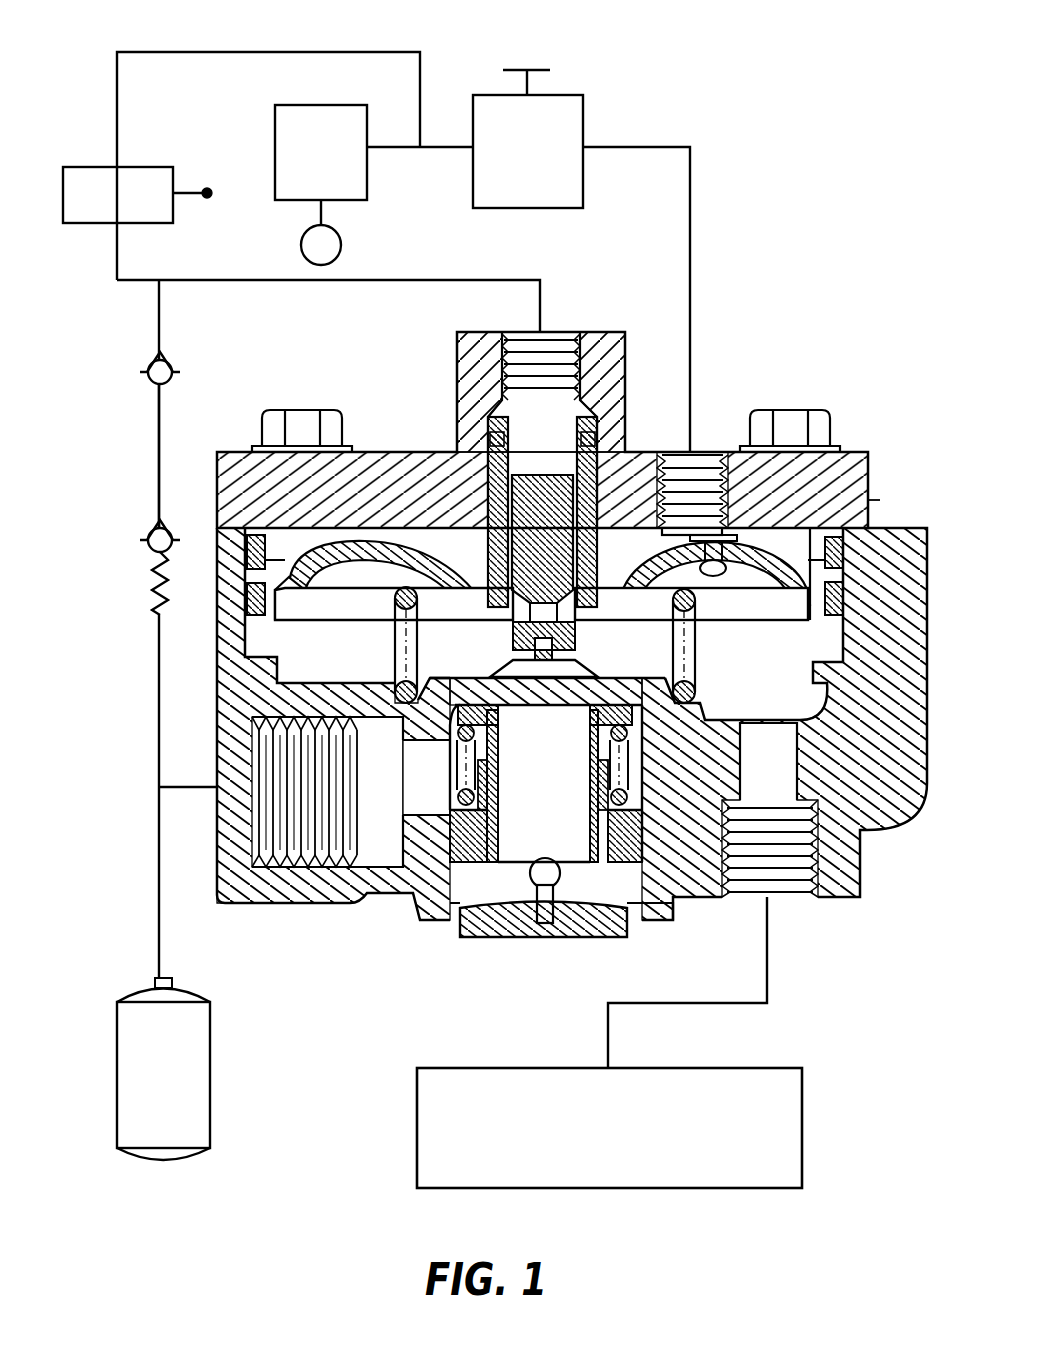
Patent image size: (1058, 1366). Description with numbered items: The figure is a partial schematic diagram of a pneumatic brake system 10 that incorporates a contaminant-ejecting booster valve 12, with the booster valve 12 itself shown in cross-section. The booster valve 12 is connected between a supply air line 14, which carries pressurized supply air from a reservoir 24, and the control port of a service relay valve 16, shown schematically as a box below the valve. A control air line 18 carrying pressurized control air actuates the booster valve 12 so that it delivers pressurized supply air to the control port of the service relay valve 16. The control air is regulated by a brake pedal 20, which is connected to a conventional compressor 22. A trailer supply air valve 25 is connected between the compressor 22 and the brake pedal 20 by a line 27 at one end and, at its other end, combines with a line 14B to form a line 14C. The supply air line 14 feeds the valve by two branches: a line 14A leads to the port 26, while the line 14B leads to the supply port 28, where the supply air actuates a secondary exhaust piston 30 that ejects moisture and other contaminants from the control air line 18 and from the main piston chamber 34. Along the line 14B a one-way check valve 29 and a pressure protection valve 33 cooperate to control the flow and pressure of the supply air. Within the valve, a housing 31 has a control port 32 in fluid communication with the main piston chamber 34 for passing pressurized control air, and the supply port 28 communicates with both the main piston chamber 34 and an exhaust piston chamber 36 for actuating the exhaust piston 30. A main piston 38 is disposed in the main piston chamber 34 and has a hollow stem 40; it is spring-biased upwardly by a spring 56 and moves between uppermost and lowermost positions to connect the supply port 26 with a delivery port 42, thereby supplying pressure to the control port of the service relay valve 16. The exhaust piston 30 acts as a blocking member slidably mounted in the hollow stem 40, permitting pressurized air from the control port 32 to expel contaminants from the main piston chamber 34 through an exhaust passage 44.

The pneumatic brake system 10 is at (718, 128).
The booster valve 12 is at (552, 611).
The supply air line 14 is at (159, 918).
The line 14A is at (190, 790).
The line 14B is at (159, 478).
The line 14C is at (415, 280).
The control port of a service relay valve 16 is at (803, 1103).
The control air line 18 is at (690, 262).
The brake pedal 20 is at (553, 150).
The compressor 22 is at (295, 153).
The reservoir 24 is at (193, 1052).
The trailer supply air valve 25 is at (165, 225).
The port 26 is at (217, 750).
The line 27 is at (290, 52).
The supply port 28 is at (563, 332).
The one-way check valve 29 is at (170, 384).
The exhaust piston 30 is at (530, 525).
The housing 31 is at (866, 500).
The control port 32 is at (697, 466).
The pressure protection valve 33 is at (155, 575).
The main piston chamber 34 is at (290, 545).
The exhaust piston chamber 36 is at (613, 422).
The main piston 38 is at (835, 530).
The hollow stem 40 is at (500, 437).
The delivery port 42 is at (790, 897).
The exhaust passage 44 is at (607, 557).
The spring 56 is at (694, 692).